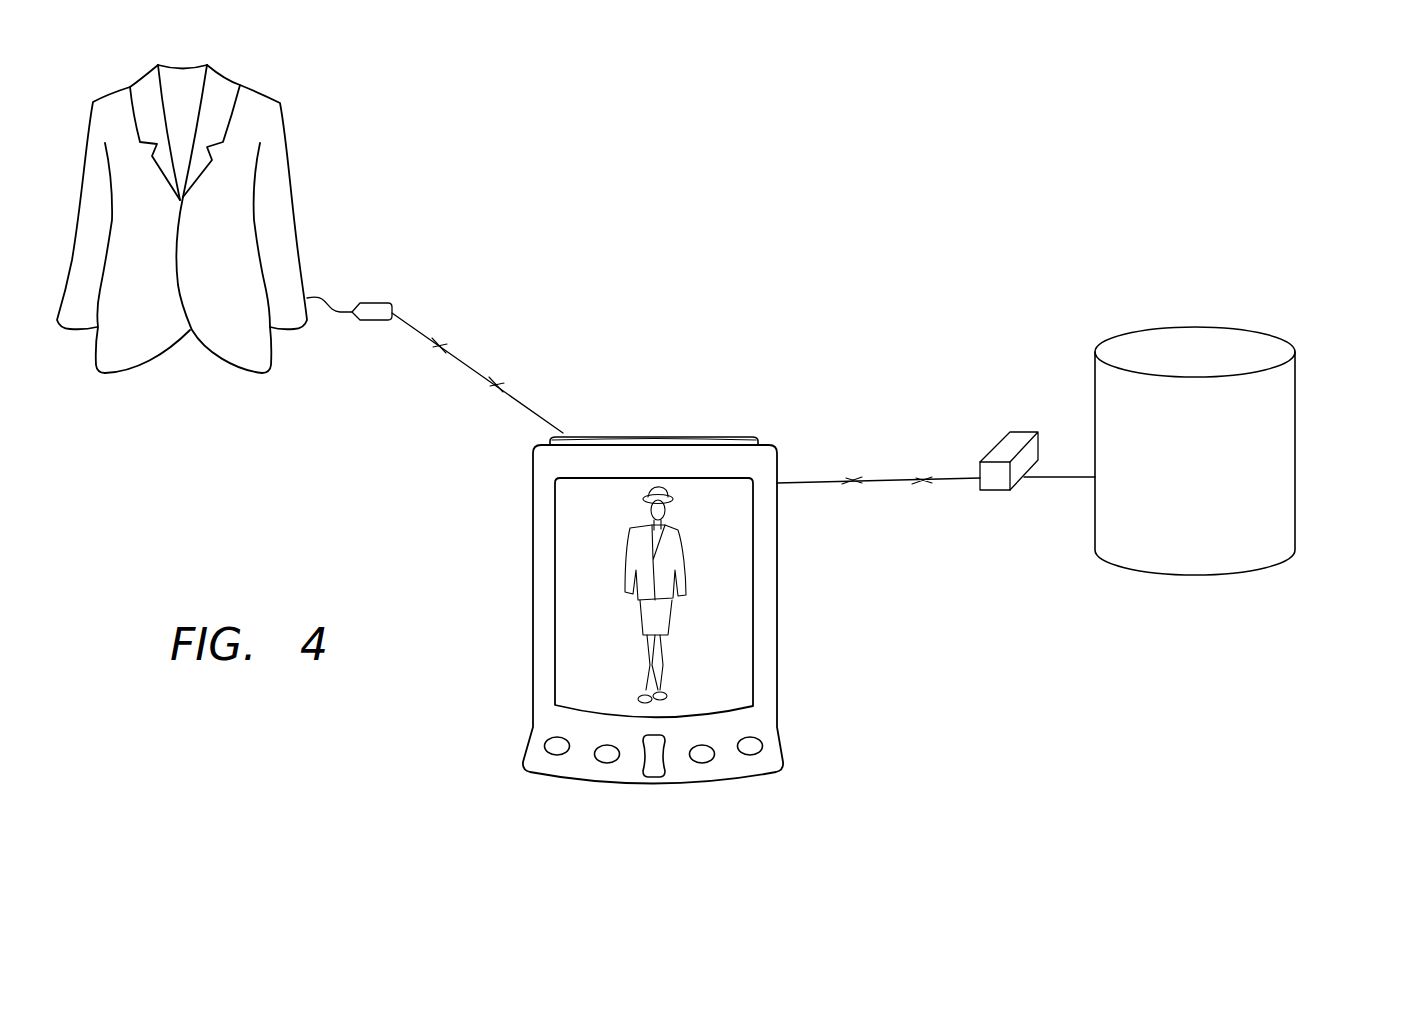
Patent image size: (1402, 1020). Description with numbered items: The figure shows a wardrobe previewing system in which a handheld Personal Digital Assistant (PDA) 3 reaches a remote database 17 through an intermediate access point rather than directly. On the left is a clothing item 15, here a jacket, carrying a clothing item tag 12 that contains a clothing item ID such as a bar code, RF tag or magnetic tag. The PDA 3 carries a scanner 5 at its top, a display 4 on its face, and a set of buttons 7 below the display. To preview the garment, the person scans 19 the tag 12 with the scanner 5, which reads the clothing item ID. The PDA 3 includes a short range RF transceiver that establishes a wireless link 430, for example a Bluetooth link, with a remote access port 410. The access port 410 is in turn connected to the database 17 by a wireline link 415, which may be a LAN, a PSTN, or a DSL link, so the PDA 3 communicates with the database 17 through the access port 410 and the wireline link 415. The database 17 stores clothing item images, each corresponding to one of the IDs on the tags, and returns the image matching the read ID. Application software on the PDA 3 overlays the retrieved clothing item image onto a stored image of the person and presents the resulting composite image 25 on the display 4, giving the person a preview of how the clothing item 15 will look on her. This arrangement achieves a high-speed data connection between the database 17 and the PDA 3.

The clothing item 15 is at (182, 219).
The clothing item tag 12 is at (372, 303).
The scanning 19 is at (462, 357).
The Personal Digital Assistant (PDA) 3 is at (786, 591).
The scanner 5 is at (702, 436).
The display 4 is at (737, 512).
The composite image 25 is at (632, 532).
The set of buttons 7 is at (584, 769).
The wireless link 430 is at (895, 475).
The remote access port 410 is at (997, 460).
The wireline link 415 is at (1065, 477).
The remote database 17 is at (1304, 335).